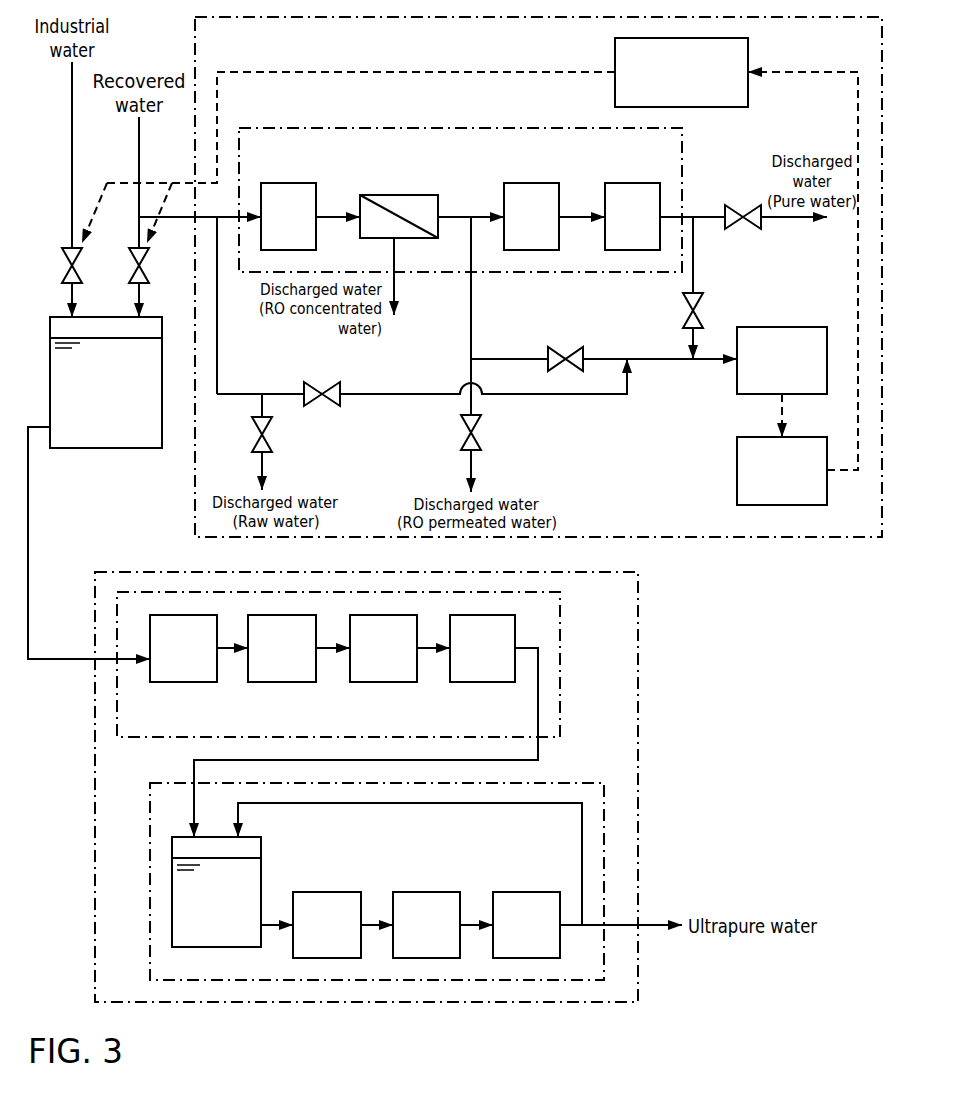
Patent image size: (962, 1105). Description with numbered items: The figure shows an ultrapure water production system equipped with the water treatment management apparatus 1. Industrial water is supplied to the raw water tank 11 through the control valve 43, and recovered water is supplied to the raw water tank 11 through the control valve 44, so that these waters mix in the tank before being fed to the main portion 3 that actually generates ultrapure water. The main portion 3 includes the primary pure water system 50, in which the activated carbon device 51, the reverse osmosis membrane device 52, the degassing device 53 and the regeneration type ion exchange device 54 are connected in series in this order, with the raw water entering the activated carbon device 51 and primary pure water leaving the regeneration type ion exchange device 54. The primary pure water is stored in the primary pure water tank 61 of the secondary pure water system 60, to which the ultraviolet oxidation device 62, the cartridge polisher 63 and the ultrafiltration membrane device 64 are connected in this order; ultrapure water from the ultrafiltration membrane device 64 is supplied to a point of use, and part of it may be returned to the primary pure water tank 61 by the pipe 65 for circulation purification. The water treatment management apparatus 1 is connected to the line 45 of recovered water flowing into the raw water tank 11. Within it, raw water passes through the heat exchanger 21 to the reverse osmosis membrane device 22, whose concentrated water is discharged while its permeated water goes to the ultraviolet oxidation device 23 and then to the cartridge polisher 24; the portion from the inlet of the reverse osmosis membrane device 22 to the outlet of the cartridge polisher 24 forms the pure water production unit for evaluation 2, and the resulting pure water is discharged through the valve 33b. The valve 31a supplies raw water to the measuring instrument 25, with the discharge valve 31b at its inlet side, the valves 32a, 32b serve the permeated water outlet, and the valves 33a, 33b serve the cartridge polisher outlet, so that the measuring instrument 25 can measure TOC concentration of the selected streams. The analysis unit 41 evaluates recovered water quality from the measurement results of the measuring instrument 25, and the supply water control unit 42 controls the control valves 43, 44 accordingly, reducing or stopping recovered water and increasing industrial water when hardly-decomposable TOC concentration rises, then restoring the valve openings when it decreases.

The water treatment management apparatus 1 is at (195, 28).
The pure water production unit for evaluation 2 is at (682, 153).
The main portion 3 is at (638, 620).
The raw water tank 11 is at (113, 445).
The heat exchanger 21 is at (292, 190).
The reverse osmosis membrane device 22 is at (411, 200).
The ultraviolet oxidation device 23 is at (546, 188).
The cartridge polisher 24 is at (647, 188).
The measuring instrument 25 is at (806, 330).
The valve 31a is at (314, 386).
The valve 31b is at (262, 433).
The valve 32a is at (571, 352).
The valve 32b is at (480, 437).
The valve 33a is at (683, 320).
The valve 33b is at (731, 208).
The analysis unit 41 is at (737, 452).
The supply water control unit 42 is at (615, 52).
The control valve 43 is at (76, 262).
The control valve 44 is at (134, 268).
The line 45 is at (139, 155).
The primary pure water system 50 is at (560, 620).
The activated carbon device 51 is at (170, 683).
The reverse osmosis membrane device 52 is at (287, 683).
The degassing device 53 is at (380, 683).
The regeneration type ion exchange device 54 is at (475, 683).
The secondary pure water system 60 is at (583, 780).
The primary pure water tank 61 is at (258, 876).
The ultraviolet oxidation device 62 is at (345, 895).
The cartridge polisher 63 is at (437, 895).
The ultrafiltration membrane device 64 is at (523, 895).
The pipe 65 is at (432, 805).